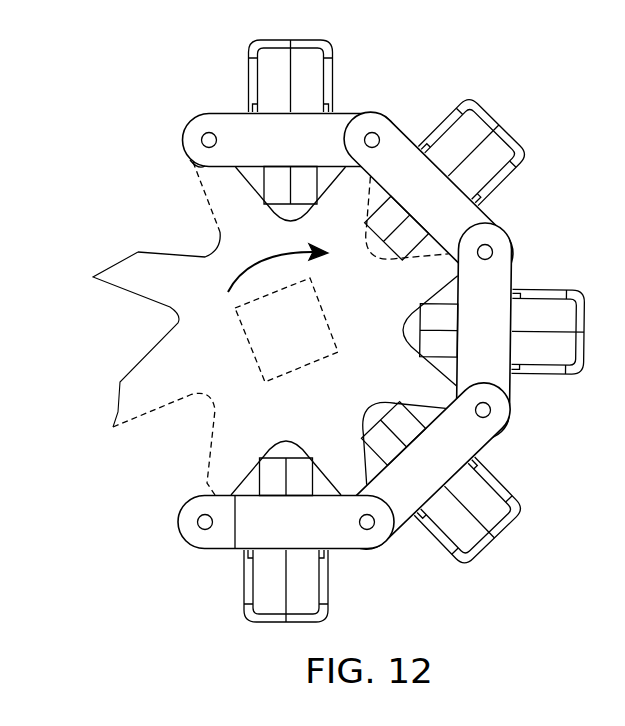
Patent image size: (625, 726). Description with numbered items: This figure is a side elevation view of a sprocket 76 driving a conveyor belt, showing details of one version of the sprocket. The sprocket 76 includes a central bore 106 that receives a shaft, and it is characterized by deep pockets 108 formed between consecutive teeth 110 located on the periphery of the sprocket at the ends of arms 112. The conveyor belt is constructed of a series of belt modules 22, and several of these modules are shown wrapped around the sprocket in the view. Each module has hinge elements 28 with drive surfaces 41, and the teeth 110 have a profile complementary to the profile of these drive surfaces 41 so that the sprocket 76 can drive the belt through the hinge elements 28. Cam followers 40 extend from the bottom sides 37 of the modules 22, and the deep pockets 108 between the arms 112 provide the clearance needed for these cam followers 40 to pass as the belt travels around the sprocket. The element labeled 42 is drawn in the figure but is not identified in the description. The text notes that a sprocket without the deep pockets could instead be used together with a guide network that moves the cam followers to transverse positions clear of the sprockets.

The belt module 22 is at (497, 341).
The hinge element 28 is at (190, 123).
The bottom side 37 is at (380, 187).
The cam follower 40 is at (410, 238).
The drive surface 41 is at (198, 168).
The clamp jaw 42 is at (317, 82).
The sprocket 76 is at (213, 388).
The central bore 106 is at (263, 335).
The deep pocket 108 is at (207, 255).
The tooth 110 is at (118, 263).
The arm 112 is at (218, 198).